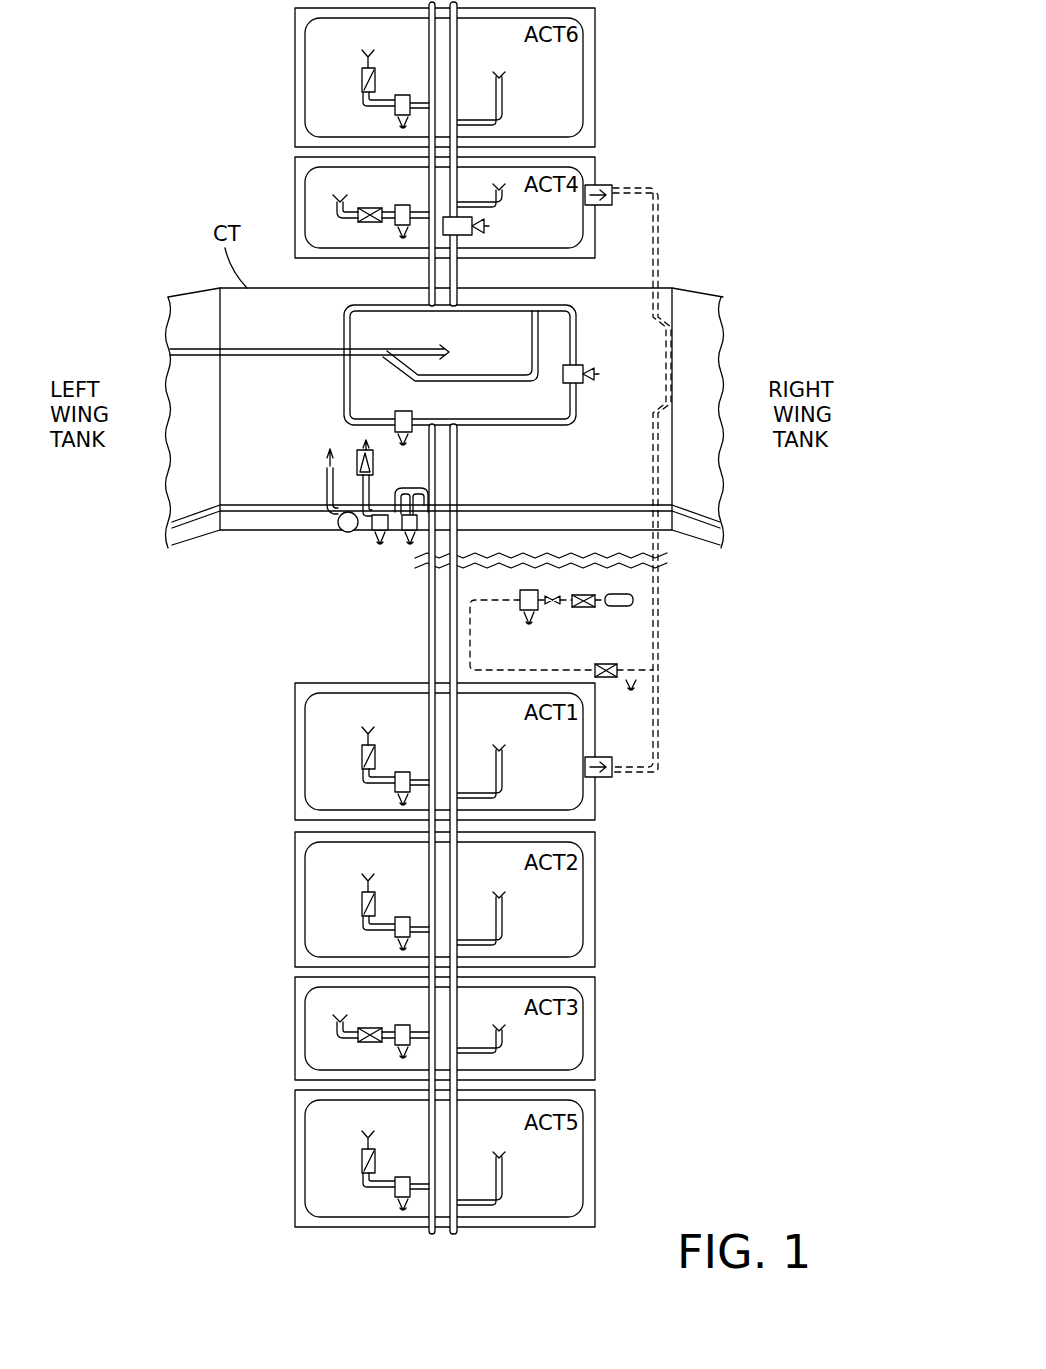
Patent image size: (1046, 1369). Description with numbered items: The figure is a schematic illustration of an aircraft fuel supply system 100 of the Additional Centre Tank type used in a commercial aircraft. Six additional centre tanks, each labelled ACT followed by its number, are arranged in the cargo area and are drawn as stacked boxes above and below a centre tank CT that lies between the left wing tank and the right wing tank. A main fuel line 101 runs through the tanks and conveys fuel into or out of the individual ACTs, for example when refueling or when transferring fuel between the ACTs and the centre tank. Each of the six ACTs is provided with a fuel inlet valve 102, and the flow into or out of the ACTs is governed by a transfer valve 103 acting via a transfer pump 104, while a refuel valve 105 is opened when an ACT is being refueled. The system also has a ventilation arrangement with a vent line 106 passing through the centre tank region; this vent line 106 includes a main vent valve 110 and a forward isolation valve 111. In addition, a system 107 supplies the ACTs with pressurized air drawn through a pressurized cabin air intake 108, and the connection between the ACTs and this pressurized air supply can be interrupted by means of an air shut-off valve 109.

The aircraft fuel supply system 100 is at (200, 122).
The main fuel line 101 is at (232, 512).
The fuel inlet valves 102 is at (403, 232).
The transfer valve 103 is at (378, 545).
The transfer pump 104 is at (340, 530).
The refuel valve 105 is at (397, 545).
The vent line 106 is at (200, 352).
The pressurized air supply system 107 is at (630, 778).
The pressurized cabin air intake 108 is at (635, 600).
The air shut-off valve 109 is at (545, 618).
The main vent valve 110 is at (593, 372).
The forward isolation valve 111 is at (490, 228).